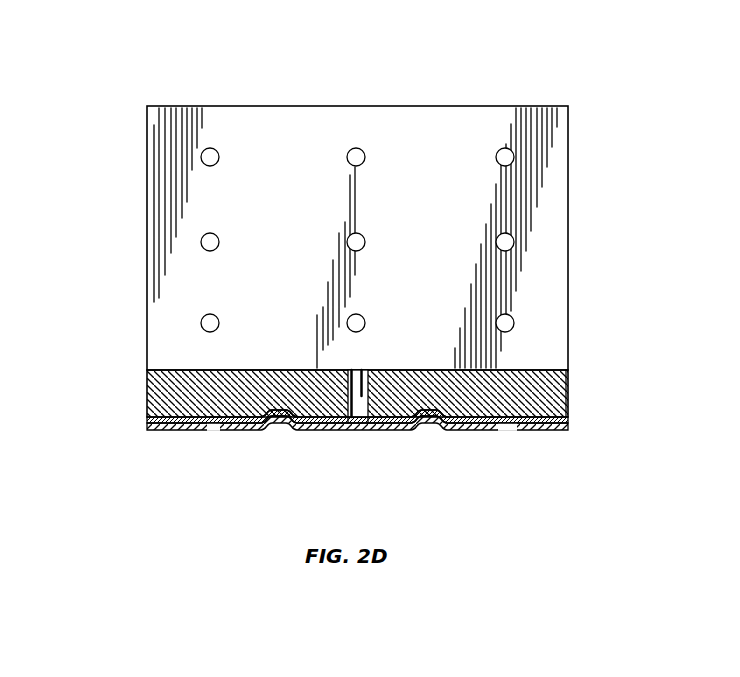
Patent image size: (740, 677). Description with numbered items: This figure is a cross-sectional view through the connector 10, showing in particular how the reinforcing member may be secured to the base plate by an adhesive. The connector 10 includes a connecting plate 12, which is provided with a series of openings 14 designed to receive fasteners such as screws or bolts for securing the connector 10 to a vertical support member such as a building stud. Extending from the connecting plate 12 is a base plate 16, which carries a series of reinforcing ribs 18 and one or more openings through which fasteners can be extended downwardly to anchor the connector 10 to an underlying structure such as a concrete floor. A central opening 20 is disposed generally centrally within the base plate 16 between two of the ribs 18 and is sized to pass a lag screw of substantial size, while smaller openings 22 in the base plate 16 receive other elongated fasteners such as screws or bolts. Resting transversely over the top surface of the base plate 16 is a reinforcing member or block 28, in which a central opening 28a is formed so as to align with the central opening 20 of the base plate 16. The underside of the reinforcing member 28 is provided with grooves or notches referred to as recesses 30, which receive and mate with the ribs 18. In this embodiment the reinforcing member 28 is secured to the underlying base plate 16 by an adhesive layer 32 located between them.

The connector 10 is at (106, 79).
The connecting plate 12 is at (552, 226).
The openings 14 is at (507, 155).
The base plate 16 is at (562, 430).
The reinforcing ribs 18 is at (280, 428).
The central opening 20 is at (360, 430).
The openings 22 is at (205, 432).
The reinforcing member 28 is at (190, 372).
The central opening 28a is at (357, 393).
The recesses 30 is at (278, 413).
The adhesive layer 32 is at (150, 413).